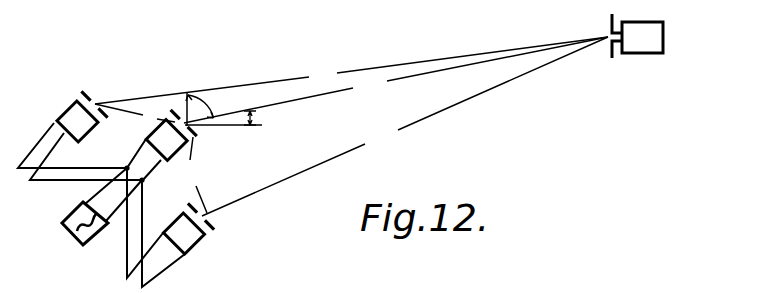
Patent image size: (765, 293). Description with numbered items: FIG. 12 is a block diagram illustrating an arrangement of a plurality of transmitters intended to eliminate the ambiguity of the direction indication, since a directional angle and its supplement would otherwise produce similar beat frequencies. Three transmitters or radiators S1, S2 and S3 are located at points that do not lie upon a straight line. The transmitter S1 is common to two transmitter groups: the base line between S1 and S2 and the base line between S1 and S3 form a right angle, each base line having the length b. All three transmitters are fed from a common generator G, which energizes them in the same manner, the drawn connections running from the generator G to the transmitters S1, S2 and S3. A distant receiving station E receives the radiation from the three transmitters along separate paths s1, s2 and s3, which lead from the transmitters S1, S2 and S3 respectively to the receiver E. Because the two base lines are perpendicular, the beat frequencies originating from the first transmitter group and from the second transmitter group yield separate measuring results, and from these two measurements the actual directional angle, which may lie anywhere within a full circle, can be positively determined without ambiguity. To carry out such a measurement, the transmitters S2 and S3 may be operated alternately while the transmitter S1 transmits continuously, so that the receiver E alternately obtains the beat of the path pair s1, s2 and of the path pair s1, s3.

The transmitter S1 is at (162, 156).
The transmitter S2 is at (178, 227).
The transmitter S3 is at (80, 132).
The generator G is at (99, 220).
The emitter E is at (637, 27).
The path from emitter to first receiver s1 is at (396, 80).
The path from emitter to second receiver s2 is at (405, 126).
The path from emitter to third receiver s3 is at (351, 70).
The baseline between receivers b is at (151, 158).